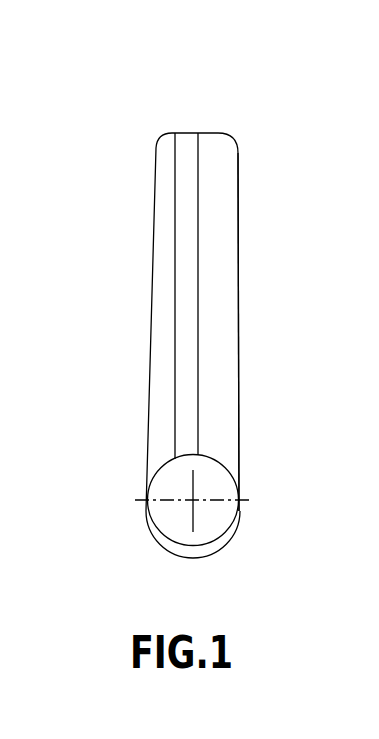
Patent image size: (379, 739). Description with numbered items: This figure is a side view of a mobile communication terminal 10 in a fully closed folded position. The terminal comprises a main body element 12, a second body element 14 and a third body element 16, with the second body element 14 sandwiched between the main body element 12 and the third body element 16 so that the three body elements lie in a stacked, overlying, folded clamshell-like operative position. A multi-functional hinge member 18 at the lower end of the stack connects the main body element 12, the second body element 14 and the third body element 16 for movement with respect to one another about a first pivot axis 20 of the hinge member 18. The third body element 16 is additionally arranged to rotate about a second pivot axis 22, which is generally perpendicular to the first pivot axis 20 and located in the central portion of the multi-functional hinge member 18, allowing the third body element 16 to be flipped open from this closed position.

The mobile communication terminal 10 is at (127, 110).
The main body element 12 is at (160, 283).
The second body element 14 is at (188, 147).
The third body element 16 is at (223, 168).
The multi-functional hinge member 18 is at (148, 542).
The first pivot axis 20 is at (192, 498).
The second pivot axis 22 is at (247, 500).